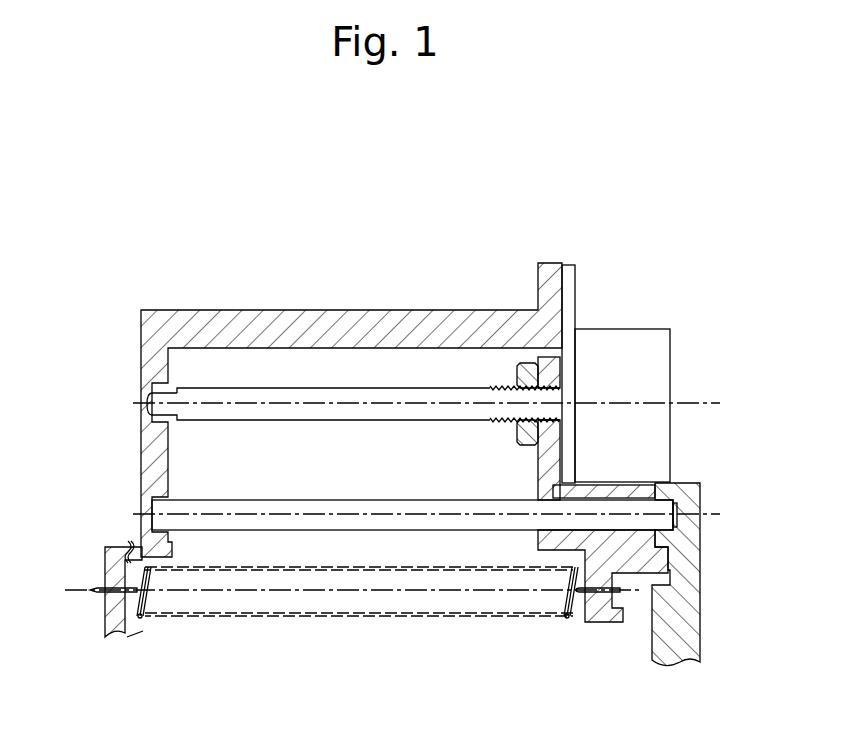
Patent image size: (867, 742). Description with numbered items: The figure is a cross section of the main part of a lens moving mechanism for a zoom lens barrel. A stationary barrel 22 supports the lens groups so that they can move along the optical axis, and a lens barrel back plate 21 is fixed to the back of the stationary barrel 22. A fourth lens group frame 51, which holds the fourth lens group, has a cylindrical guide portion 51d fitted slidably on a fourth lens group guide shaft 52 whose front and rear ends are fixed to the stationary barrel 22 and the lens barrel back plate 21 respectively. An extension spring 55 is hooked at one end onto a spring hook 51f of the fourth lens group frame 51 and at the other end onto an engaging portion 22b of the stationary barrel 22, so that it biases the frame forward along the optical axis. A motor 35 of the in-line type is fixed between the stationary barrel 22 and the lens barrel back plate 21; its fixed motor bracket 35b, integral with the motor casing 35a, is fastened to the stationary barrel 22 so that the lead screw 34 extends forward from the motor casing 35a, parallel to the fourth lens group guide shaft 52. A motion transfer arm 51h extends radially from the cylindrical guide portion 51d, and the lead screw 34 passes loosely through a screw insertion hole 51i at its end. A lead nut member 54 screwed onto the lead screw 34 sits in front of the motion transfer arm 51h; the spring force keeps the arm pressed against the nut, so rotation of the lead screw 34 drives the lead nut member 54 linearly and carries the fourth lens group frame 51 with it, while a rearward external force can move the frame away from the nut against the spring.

The lens barrel back plate 21 is at (692, 620).
The stationary barrel 22 is at (414, 311).
The engaging portion 22b is at (110, 612).
The lead screw 34 is at (312, 395).
The motor 35 is at (642, 342).
The motor casing 35a is at (638, 343).
The fixed motor bracket 35b is at (570, 273).
The fourth lens group frame 51 is at (665, 520).
The cylindrical guide portion 51d is at (665, 520).
The spring hook 51f is at (595, 622).
The motion transfer arm 51h is at (617, 487).
The screw insertion hole 51i is at (560, 393).
The fourth lens group guide shaft 52 is at (197, 505).
The lead nut member 54 is at (513, 372).
The extension spring 55 is at (560, 600).